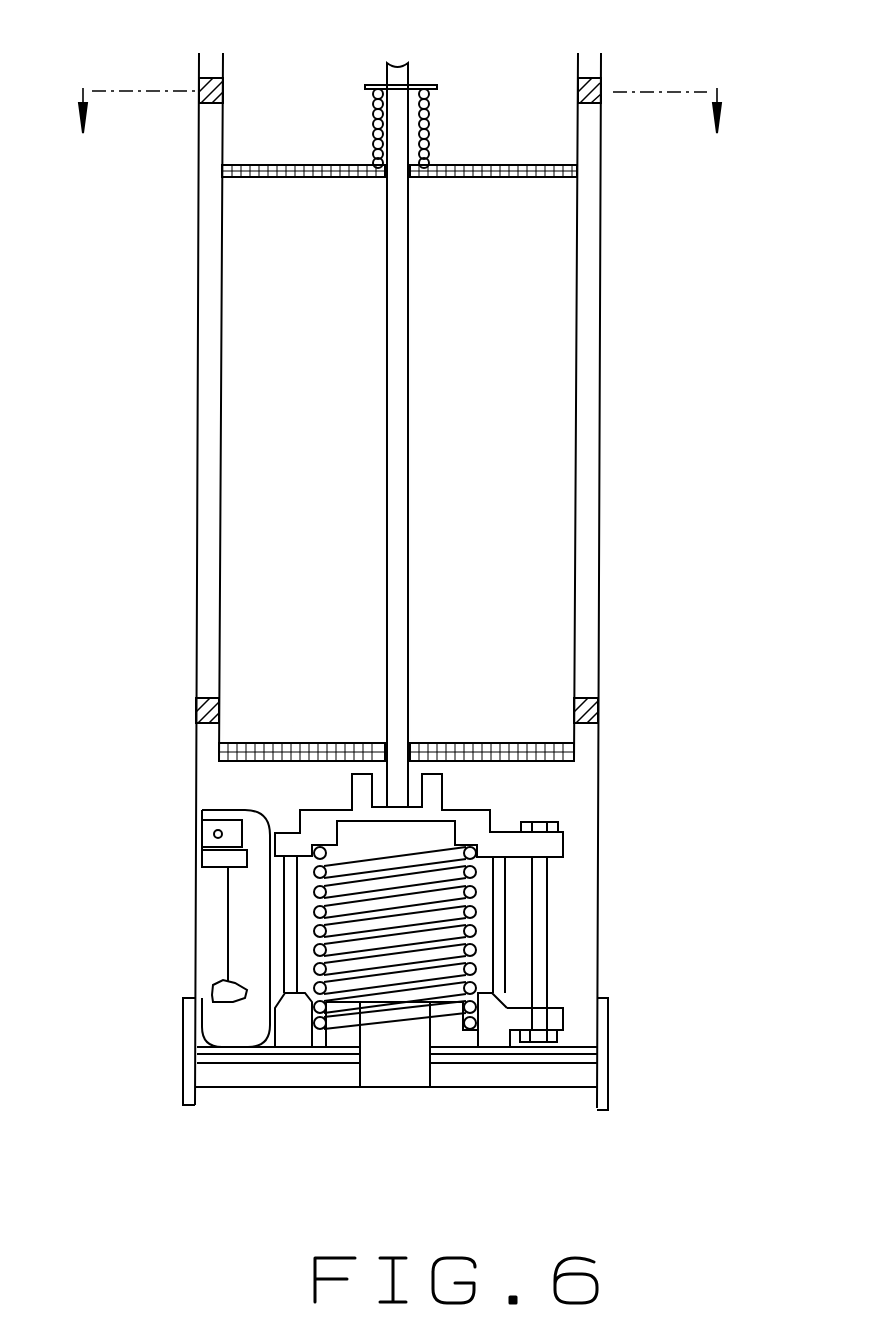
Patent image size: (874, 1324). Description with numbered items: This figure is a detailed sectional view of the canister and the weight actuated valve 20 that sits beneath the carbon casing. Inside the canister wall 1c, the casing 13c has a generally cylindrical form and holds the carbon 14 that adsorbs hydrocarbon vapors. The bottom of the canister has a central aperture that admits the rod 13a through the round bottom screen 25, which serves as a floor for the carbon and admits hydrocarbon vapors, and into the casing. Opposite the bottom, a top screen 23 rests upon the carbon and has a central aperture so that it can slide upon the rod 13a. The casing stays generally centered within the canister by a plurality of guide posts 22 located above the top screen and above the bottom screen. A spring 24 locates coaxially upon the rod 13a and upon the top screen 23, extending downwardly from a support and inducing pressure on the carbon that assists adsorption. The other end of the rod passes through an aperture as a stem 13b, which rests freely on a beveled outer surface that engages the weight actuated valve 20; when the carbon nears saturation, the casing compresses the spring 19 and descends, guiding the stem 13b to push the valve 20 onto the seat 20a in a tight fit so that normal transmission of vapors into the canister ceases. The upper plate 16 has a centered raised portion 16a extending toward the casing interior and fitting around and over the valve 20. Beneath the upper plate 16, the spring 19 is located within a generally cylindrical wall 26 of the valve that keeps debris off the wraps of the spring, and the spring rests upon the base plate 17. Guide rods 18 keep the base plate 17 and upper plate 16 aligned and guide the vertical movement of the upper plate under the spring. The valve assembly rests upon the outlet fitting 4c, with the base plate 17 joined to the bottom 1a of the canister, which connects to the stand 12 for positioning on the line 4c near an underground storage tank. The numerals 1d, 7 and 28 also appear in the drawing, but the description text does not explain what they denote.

The bottom of the canister 1a is at (233, 1063).
The canister wall 1c is at (198, 173).
The base plate right portion 1d is at (550, 1077).
The outlet fitting 4c is at (405, 1090).
The section line for FIG. 7 is at (401, 128).
The stand 12 is at (187, 1033).
The rod 13a is at (402, 380).
The stem 13b is at (396, 786).
The casing 13c is at (577, 405).
The carbon 14 is at (512, 497).
The upper plate 16 is at (513, 845).
The raised portion of upper plate 16a is at (357, 788).
The base plate 17 is at (500, 1017).
The guide rods 18 is at (537, 928).
The spring 19 is at (477, 905).
The weight actuated valve 20 is at (515, 913).
The seat 20a is at (285, 993).
The guide posts 22 is at (198, 89).
The top screen 23 is at (496, 160).
The spring 24 is at (433, 106).
The bottom screen 25 is at (300, 743).
The cylindrical wall 26 is at (505, 950).
The bracket 28 is at (252, 925).